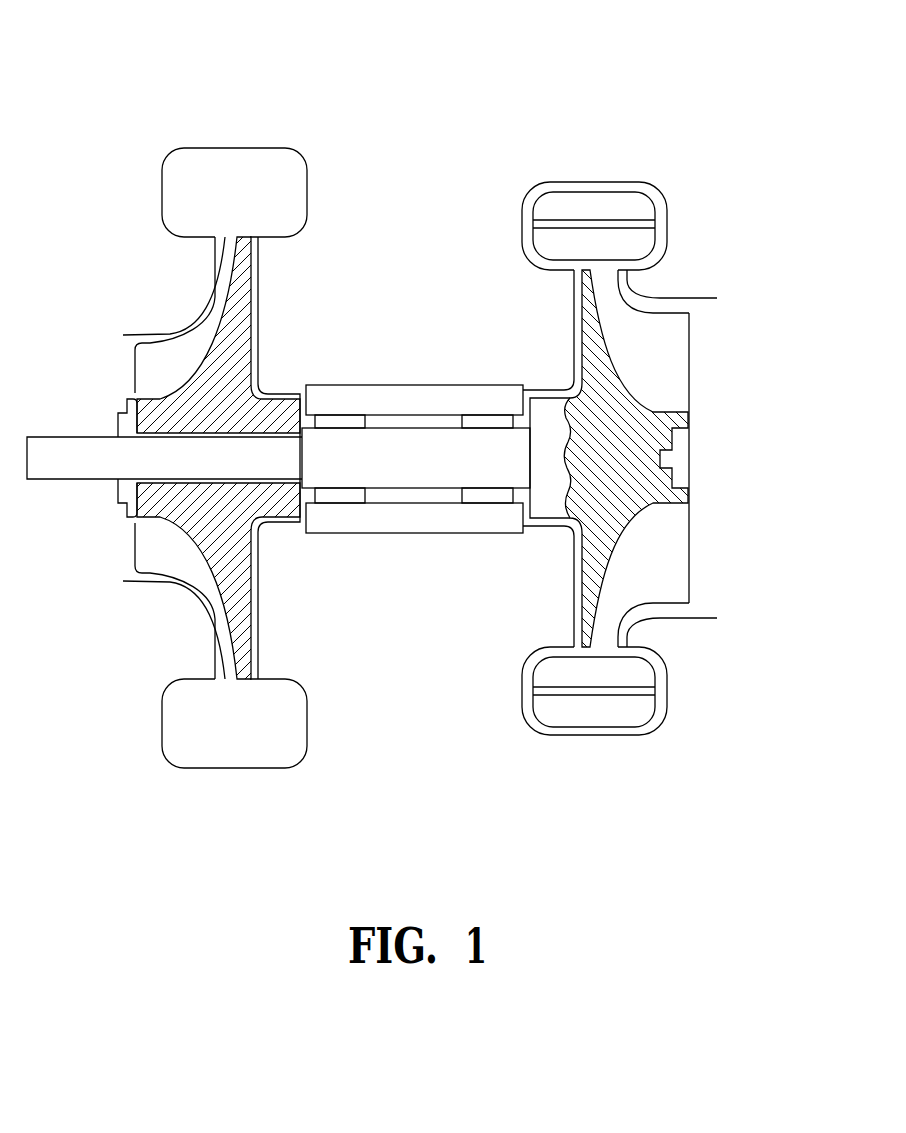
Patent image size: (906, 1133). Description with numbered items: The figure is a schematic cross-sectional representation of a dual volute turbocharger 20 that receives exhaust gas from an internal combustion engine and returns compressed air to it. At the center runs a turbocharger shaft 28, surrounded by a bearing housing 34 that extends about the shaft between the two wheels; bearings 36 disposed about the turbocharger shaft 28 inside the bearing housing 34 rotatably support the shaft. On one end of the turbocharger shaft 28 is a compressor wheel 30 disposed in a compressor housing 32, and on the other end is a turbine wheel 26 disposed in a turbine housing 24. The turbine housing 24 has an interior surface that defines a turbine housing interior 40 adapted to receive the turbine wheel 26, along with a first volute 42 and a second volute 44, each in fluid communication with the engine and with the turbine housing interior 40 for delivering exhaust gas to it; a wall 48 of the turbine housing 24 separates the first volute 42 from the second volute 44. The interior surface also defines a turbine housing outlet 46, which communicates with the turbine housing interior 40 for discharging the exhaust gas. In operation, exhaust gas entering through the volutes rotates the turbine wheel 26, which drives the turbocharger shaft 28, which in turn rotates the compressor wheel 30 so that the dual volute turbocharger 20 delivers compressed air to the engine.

The dual volute turbocharger 20 is at (101, 107).
The turbine housing 24 is at (620, 736).
The turbine wheel 26 is at (647, 497).
The turbocharger shaft 28 is at (387, 453).
The compressor wheel 30 is at (157, 410).
The compressor housing 32 is at (218, 767).
The bearing housing 34 is at (406, 385).
The bearings 36 is at (343, 495).
The turbine housing interior 40 is at (642, 626).
The first volute 42 is at (582, 708).
The second volute 44 is at (562, 670).
The turbine housing outlet 46 is at (712, 363).
The wall 48 is at (600, 222).